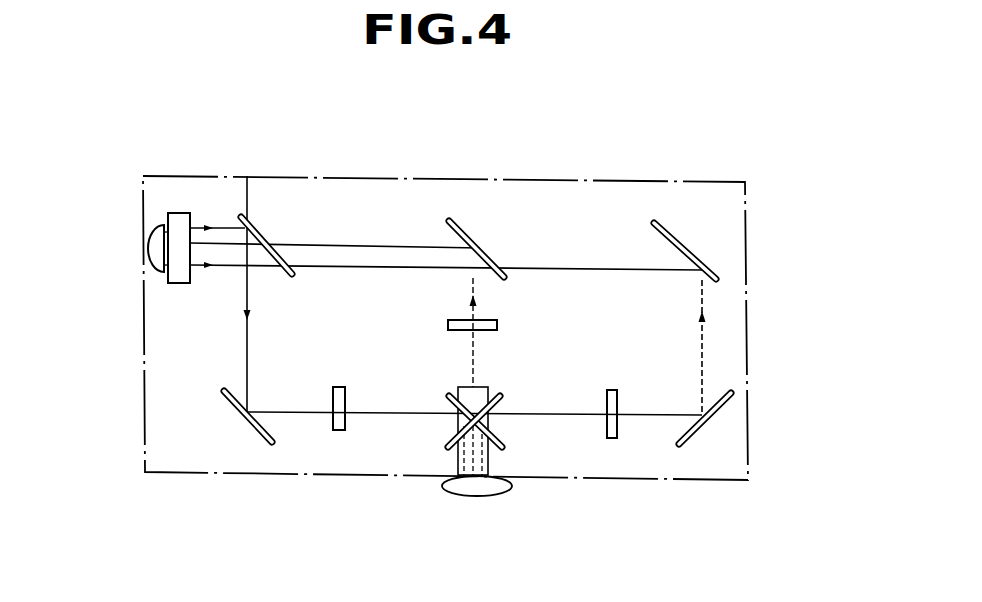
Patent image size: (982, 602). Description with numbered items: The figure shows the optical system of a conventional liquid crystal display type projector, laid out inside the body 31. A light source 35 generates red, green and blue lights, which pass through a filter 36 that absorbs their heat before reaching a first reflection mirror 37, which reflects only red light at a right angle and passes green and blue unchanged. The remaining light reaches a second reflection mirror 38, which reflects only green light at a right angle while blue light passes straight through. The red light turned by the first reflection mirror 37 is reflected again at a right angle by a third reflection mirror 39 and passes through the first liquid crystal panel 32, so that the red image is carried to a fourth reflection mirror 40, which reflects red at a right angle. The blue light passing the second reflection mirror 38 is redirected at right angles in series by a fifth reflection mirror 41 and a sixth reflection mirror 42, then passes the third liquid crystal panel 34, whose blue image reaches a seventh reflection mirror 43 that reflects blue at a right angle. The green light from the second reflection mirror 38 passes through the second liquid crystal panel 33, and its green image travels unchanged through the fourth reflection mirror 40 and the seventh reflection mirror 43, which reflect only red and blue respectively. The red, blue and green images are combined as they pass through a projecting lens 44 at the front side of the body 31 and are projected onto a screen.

The body 31 is at (483, 328).
The first liquid crystal panel 32 is at (339, 471).
The second liquid crystal panel 33 is at (447, 319).
The third liquid crystal panel 34 is at (615, 470).
The light source 35 is at (105, 248).
The filter 36 is at (170, 190).
The first reflection mirror 37 is at (266, 187).
The second reflection mirror 38 is at (450, 217).
The third reflection mirror 39 is at (255, 475).
The fourth reflection mirror 40 is at (500, 447).
The fifth reflection mirror 41 is at (685, 195).
The sixth reflection mirror 42 is at (699, 472).
The seventh reflection mirror 43 is at (447, 447).
The projecting lens 44 is at (477, 516).